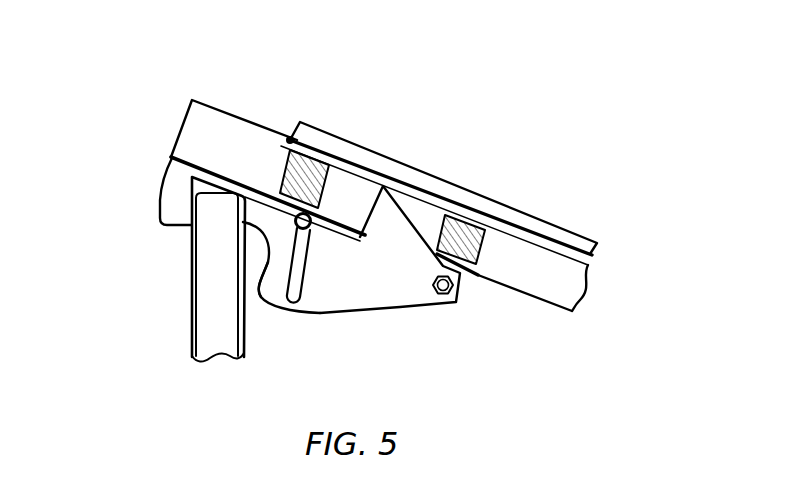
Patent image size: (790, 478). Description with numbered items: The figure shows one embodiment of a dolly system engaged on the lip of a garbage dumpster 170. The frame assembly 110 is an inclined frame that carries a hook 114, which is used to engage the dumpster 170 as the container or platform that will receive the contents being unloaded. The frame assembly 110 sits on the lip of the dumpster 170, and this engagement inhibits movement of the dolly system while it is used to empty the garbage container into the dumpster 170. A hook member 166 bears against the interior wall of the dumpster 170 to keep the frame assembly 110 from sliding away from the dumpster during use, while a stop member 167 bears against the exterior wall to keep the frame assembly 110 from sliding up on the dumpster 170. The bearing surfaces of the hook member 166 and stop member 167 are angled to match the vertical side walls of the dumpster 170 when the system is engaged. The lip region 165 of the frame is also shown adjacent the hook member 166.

The frame assembly 110 is at (262, 125).
The hook 114 is at (213, 173).
The lip 165 is at (172, 202).
The hook member 166 is at (217, 213).
The stop member 167 is at (266, 288).
The dumpster 170 is at (203, 283).